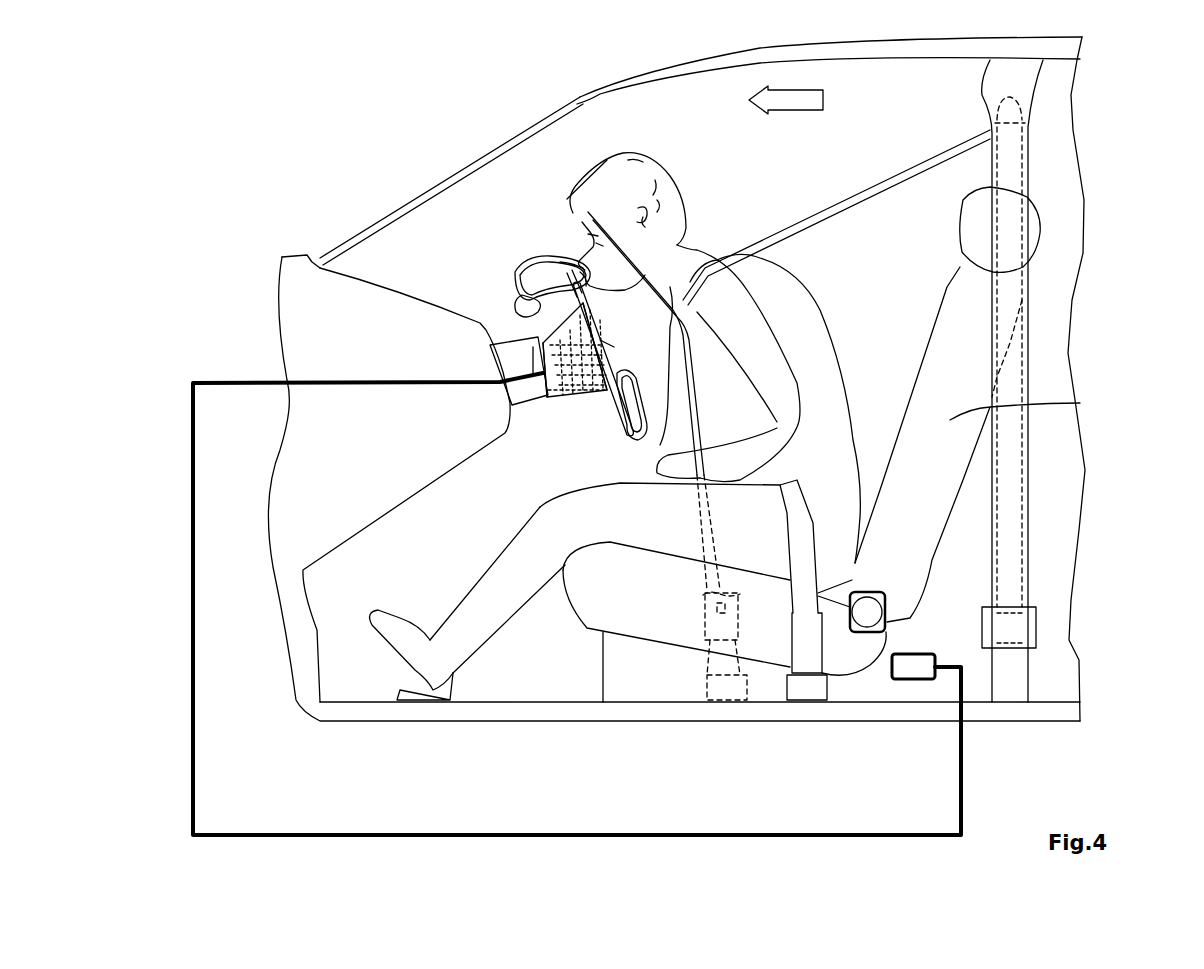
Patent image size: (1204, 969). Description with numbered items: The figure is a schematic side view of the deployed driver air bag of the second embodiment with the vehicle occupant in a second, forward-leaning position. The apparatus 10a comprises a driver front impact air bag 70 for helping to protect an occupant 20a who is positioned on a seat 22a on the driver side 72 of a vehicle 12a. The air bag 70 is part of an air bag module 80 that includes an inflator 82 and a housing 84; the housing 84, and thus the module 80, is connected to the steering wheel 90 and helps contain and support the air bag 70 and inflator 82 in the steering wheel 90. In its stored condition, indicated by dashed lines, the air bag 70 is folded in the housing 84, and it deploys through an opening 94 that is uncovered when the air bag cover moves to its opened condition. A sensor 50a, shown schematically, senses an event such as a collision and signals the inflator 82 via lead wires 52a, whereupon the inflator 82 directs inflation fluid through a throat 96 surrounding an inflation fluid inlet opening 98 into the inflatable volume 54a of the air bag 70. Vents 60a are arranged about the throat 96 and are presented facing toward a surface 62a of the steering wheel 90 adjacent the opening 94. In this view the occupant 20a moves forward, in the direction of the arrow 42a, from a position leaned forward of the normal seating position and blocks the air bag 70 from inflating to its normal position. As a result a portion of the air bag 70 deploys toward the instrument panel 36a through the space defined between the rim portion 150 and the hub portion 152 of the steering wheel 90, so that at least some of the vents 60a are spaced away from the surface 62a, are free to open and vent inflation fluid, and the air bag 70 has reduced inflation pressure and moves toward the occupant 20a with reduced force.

The apparatus 10a is at (292, 207).
The vehicle 12a is at (292, 135).
The occupant 20a is at (817, 380).
The seat 22a is at (1080, 403).
The instrument panel 36a is at (387, 480).
The arrow 42a is at (776, 94).
The sensor 50a is at (913, 668).
The lead wires 52a is at (397, 834).
The inflatable volume 54a is at (615, 223).
The vents 60a is at (523, 283).
The surface 62a is at (647, 468).
The driver front impact air bag 70 is at (582, 382).
The driver side 72 is at (573, 193).
The air bag module 80 is at (537, 337).
The inflator 82 is at (547, 373).
The housing 84 is at (563, 380).
The steering wheel 90 is at (613, 437).
The opening 94 is at (610, 343).
The throat 96 is at (575, 268).
The inflation fluid inlet opening 98 is at (582, 275).
The rim portion 150 is at (605, 482).
The hub portion 152 is at (563, 382).